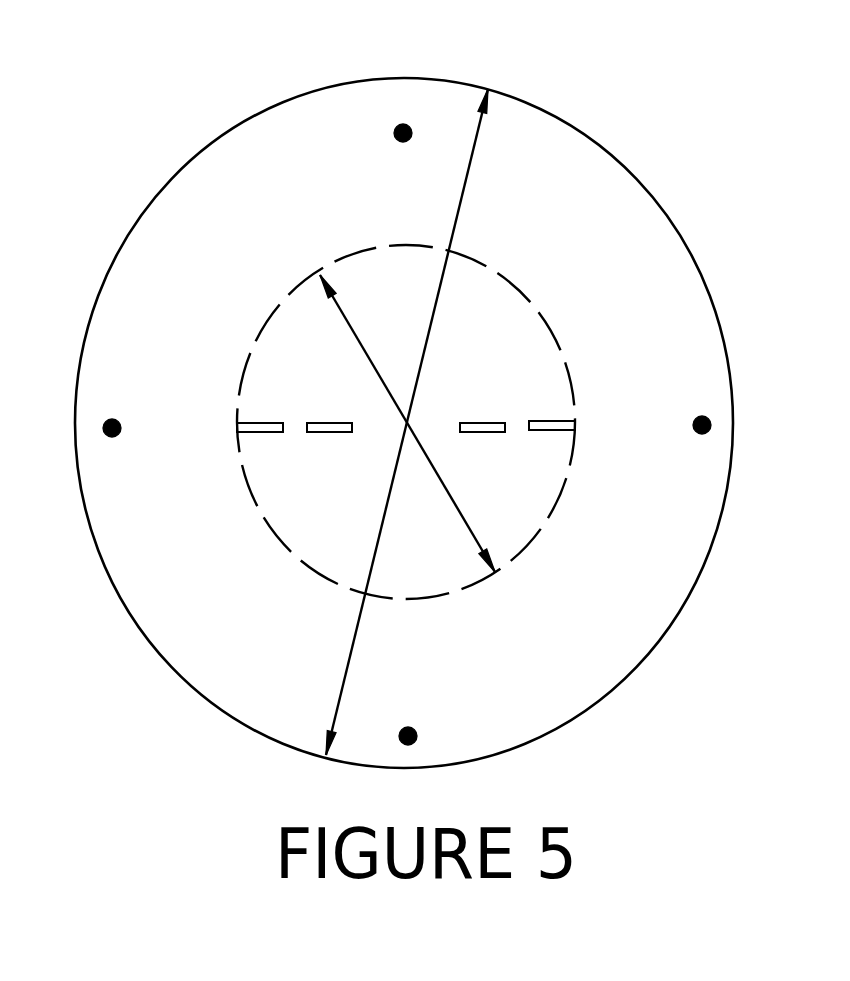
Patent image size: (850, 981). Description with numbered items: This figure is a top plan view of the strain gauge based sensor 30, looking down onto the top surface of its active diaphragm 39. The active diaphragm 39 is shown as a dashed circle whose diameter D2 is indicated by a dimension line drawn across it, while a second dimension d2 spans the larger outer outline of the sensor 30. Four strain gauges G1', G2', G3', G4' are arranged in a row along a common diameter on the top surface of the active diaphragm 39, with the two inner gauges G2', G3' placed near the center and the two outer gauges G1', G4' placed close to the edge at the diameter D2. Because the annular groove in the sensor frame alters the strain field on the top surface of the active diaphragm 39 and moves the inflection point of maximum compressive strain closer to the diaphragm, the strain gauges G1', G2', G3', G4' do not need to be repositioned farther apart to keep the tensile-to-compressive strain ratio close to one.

The strain gauge based sensor 30 is at (78, 75).
The active diaphragm 39 is at (542, 308).
The diameter of the active diaphragm D2 is at (302, 320).
The diameter d2 is at (477, 383).
The strain gauge G1' is at (230, 422).
The strain gauge G2' is at (335, 401).
The strain gauge G3' is at (487, 401).
The strain gauge G4' is at (585, 428).